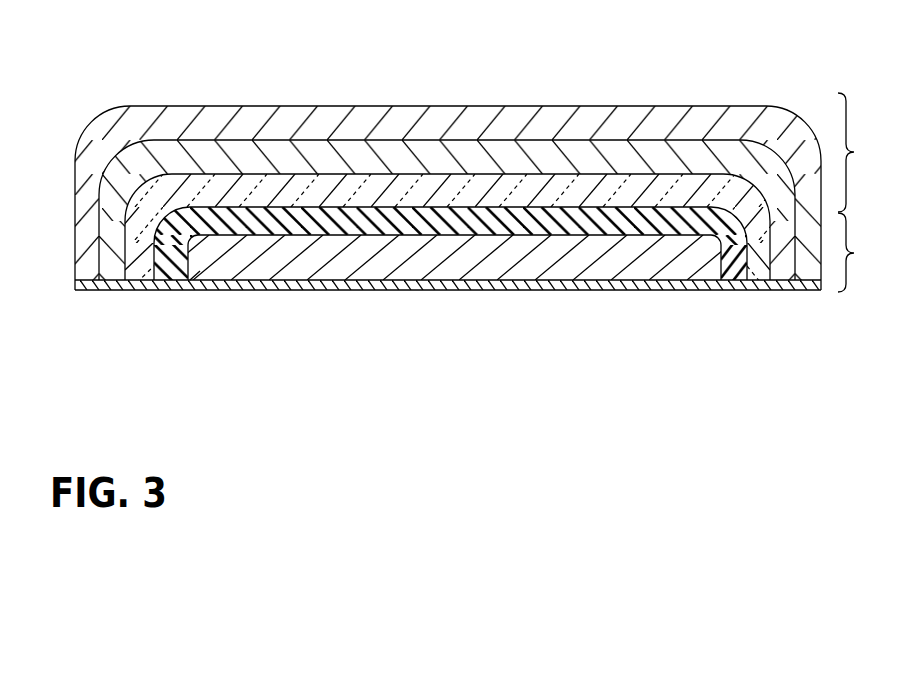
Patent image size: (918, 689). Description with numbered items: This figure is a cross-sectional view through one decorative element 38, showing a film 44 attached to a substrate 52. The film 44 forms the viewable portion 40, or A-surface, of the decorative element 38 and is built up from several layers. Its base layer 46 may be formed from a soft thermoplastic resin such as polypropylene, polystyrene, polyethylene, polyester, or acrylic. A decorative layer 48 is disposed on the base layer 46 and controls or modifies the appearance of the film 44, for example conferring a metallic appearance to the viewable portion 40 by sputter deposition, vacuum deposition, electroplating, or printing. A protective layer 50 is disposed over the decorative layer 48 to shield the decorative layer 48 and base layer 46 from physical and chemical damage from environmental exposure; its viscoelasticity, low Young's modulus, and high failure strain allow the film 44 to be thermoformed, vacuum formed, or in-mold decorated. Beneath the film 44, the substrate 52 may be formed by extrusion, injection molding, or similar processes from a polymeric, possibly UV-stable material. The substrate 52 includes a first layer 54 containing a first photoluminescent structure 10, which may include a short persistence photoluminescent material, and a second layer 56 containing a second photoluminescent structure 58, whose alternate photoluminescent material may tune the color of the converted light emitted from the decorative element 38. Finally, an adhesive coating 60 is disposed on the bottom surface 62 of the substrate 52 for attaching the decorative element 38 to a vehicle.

The photoluminescent structure 10 is at (294, 274).
The decorative element 38 is at (353, 78).
The viewable portion 40 is at (249, 103).
The film 44 is at (862, 152).
The base layer 46 is at (135, 232).
The decorative layer 48 is at (117, 192).
The protective layer 50 is at (108, 145).
The substrate 52 is at (862, 252).
The first layer 54 is at (210, 277).
The second layer 56 is at (165, 258).
The second photoluminescent structure 58 is at (248, 246).
The adhesive coating 60 is at (550, 292).
The bottom surface 62 is at (672, 295).